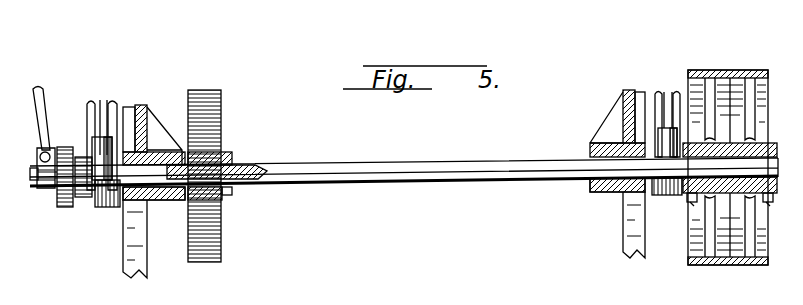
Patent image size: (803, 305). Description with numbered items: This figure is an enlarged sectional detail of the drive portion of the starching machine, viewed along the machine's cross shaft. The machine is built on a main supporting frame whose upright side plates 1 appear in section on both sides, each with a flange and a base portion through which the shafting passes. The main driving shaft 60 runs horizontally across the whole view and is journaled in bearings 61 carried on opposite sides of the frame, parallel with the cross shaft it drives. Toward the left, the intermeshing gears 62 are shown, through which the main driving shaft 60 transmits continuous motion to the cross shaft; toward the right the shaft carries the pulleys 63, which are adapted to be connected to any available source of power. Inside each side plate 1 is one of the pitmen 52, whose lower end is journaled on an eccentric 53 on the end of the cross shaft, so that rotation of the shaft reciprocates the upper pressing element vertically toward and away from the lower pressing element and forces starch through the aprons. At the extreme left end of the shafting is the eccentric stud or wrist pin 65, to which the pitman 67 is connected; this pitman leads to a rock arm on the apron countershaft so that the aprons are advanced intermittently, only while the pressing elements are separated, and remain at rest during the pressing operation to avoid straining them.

The upright side plates 1 is at (623, 92).
The pitmen 52 is at (668, 92).
The eccentrics 53 is at (657, 195).
The main driving shaft 60 is at (412, 162).
The bearings 61 is at (612, 188).
The intermeshing gears 62 is at (220, 155).
The pulleys 63 is at (737, 77).
The eccentric stud or wrist pin 65 is at (30, 186).
The pitman 67 is at (40, 88).